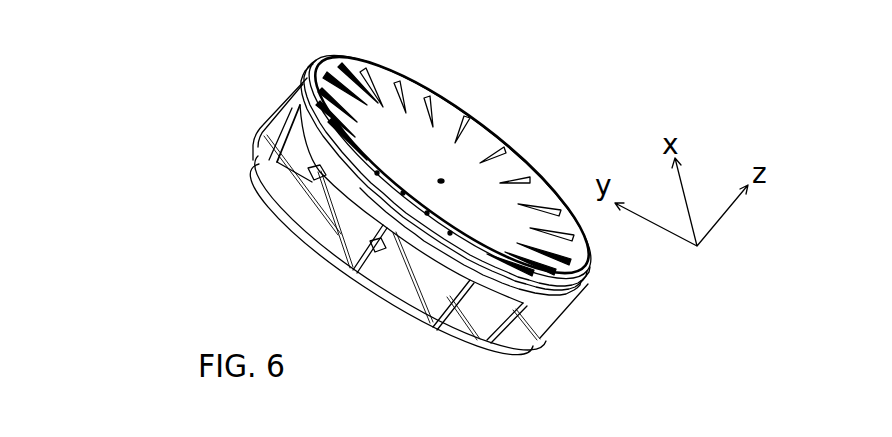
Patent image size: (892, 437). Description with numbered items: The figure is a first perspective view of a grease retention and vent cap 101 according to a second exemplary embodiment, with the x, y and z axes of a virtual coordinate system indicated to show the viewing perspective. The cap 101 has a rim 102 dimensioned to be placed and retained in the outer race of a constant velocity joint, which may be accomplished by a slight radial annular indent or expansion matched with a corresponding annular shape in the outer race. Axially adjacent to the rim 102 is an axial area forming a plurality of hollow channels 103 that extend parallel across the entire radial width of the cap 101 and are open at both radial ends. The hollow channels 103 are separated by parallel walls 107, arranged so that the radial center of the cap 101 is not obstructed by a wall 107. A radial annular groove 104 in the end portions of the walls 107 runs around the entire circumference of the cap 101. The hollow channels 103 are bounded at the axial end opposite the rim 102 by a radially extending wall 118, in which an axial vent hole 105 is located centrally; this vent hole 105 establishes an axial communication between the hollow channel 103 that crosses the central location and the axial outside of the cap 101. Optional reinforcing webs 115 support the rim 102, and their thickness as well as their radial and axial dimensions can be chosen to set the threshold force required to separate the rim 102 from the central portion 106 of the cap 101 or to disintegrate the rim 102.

The grease retention and vent cap 101 is at (225, 108).
The rim 102 is at (562, 307).
The hollow channels 103 is at (390, 267).
The radial annular groove 104 is at (287, 193).
The axial vent hole 105 is at (443, 178).
The central portion 106 is at (417, 145).
The walls 107 is at (523, 352).
The reinforcing webs 115 is at (553, 190).
The radially extending wall 118 is at (472, 188).